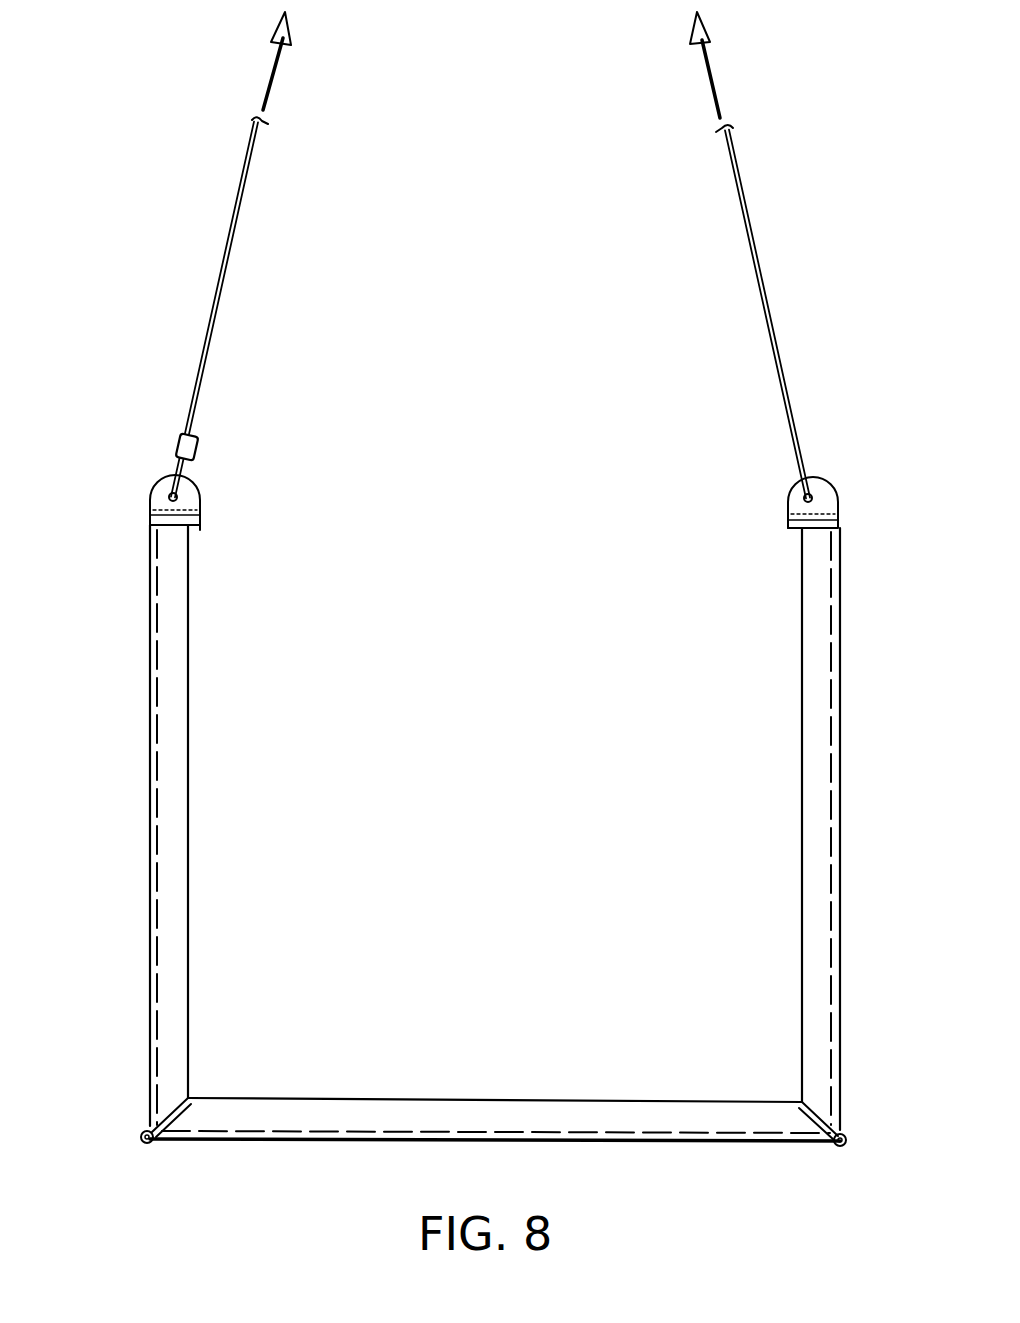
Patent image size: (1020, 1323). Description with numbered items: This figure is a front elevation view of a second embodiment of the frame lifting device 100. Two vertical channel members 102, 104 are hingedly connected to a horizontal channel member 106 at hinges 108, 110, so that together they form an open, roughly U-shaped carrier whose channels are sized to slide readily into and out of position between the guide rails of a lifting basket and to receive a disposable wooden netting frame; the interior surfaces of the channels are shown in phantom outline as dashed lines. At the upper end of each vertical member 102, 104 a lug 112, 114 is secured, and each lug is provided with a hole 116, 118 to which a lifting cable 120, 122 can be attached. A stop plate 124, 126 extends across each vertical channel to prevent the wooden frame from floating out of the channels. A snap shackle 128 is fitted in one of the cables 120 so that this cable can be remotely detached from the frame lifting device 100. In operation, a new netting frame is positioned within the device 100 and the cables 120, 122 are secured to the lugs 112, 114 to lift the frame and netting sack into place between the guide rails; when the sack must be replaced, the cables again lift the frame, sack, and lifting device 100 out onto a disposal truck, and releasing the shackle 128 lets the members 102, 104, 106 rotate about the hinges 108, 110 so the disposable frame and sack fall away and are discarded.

The frame lifting device 100 is at (528, 345).
The vertical channel member 102 is at (148, 821).
The vertical channel member 104 is at (842, 845).
The horizontal channel member 106 is at (372, 1140).
The hinge 108 is at (146, 1145).
The hinge 110 is at (846, 1145).
The lug 112 is at (157, 480).
The lug 114 is at (825, 479).
The hole 116 is at (168, 498).
The hole 118 is at (814, 498).
The lifting cable 120 is at (223, 271).
The lifting cable 122 is at (766, 286).
The stop plate 124 is at (195, 535).
The stop plate 126 is at (797, 535).
The snap shackle 128 is at (171, 438).